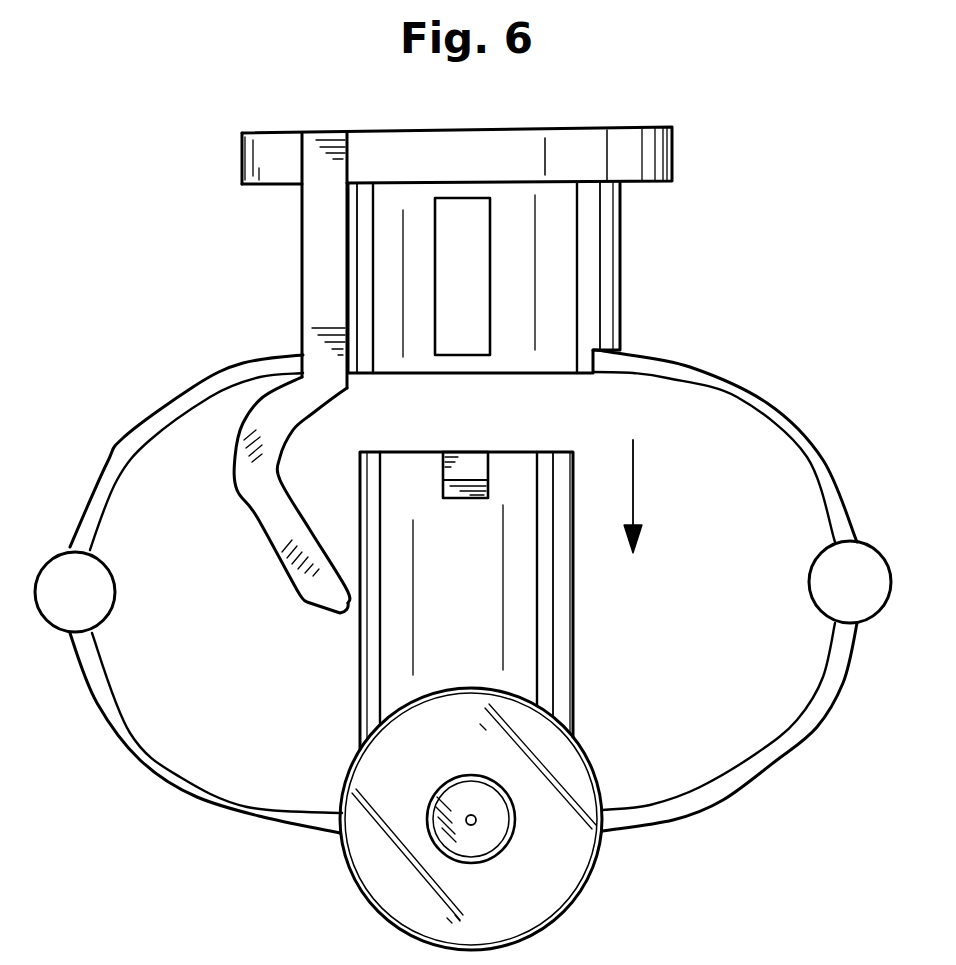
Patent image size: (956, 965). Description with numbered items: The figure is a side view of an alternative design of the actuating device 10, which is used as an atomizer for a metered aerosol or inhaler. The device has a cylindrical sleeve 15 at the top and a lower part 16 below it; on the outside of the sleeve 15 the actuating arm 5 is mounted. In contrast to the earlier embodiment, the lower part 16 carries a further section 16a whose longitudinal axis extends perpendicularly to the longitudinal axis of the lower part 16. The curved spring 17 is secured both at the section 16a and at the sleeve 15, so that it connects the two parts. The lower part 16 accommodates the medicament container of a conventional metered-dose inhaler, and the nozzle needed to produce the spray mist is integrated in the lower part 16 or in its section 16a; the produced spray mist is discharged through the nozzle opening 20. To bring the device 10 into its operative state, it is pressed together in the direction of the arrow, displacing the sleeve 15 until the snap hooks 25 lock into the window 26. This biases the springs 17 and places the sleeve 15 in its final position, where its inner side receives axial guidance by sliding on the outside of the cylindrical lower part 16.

The actuating device 10 is at (183, 314).
The actuating arm 5 is at (268, 518).
The cylindrical sleeve 15 is at (607, 273).
The lower part 16 is at (558, 640).
The section 16a is at (540, 892).
The curved spring 17 is at (110, 472).
The nozzle opening 20 is at (471, 820).
The snap hooks 25 is at (462, 460).
The window 26 is at (458, 337).